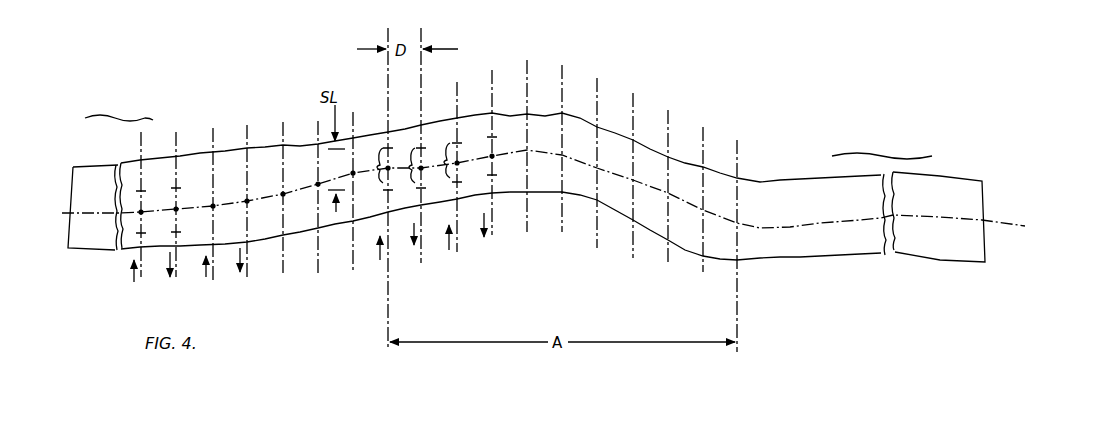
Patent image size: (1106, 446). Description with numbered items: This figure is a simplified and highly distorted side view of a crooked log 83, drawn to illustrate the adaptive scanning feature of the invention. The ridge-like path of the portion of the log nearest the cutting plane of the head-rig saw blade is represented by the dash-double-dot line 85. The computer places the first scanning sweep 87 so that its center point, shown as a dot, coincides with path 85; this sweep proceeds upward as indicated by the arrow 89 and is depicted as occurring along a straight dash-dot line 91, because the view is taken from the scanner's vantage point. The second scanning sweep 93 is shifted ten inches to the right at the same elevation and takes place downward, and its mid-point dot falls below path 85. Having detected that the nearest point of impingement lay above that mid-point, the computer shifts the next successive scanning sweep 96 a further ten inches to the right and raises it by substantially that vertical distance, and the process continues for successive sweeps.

The log 83 is at (771, 176).
The dash-double-dot line 85 is at (782, 229).
The first scanning sweep 87 is at (375, 147).
The arrow 89 is at (378, 250).
The dash-dot line 91 is at (392, 268).
The second scanning sweep 93 is at (408, 146).
The next successive scanning sweep 96 is at (442, 141).